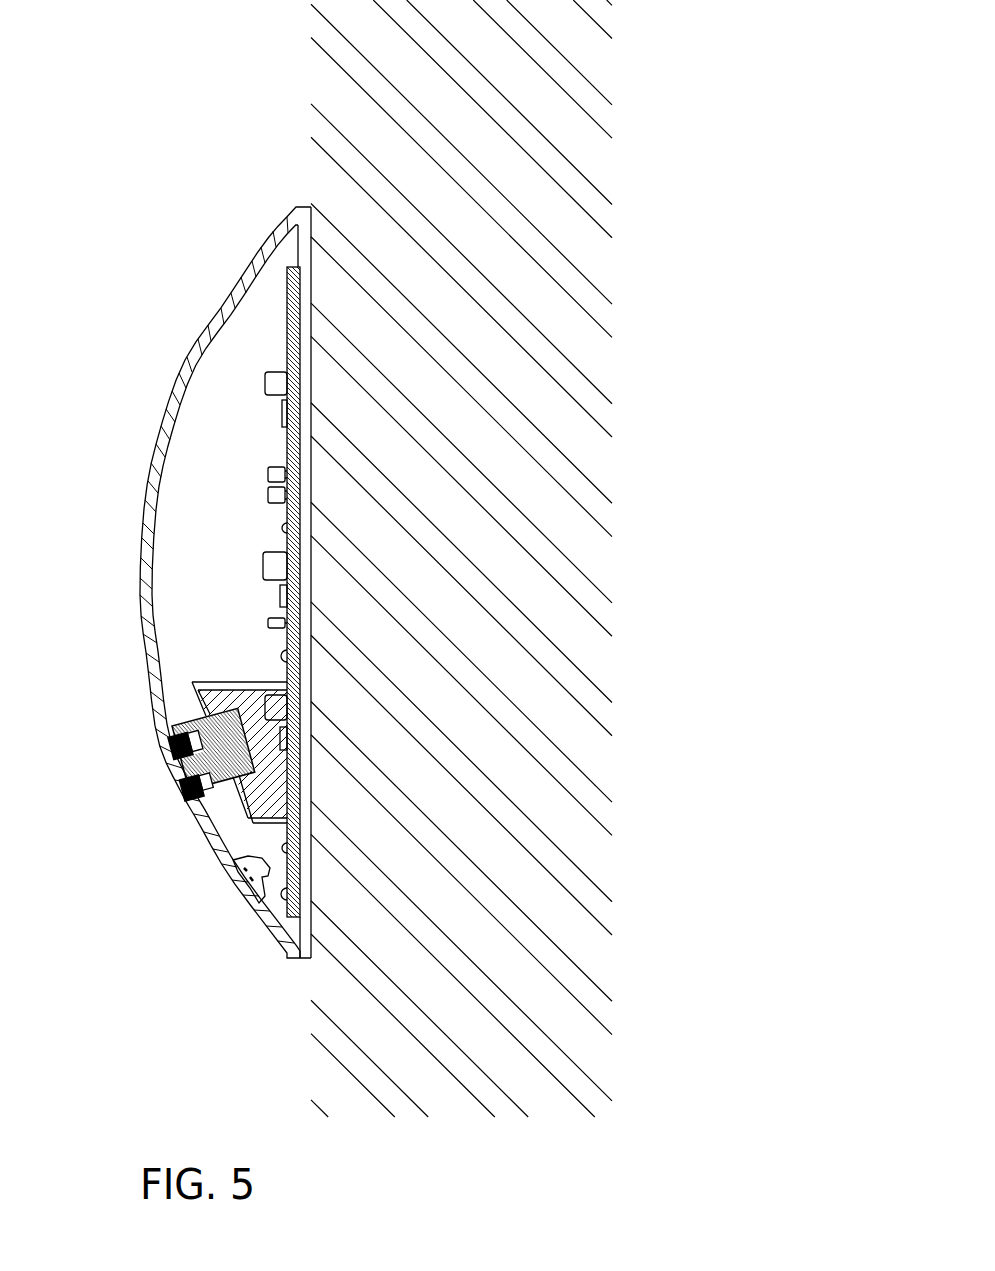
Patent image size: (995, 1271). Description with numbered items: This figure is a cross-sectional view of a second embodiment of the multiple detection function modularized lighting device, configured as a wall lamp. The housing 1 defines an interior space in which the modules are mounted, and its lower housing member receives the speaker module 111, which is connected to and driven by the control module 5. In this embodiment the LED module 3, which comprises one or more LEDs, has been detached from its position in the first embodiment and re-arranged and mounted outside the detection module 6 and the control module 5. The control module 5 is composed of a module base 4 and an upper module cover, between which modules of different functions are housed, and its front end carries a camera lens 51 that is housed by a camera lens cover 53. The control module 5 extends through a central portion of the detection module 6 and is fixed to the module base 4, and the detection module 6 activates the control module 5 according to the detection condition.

The housing 1 is at (273, 225).
The LED module 3 is at (287, 278).
The module base 4 is at (187, 729).
The control module 5 is at (225, 795).
The detection module 6 is at (157, 738).
The camera lens cover 53 is at (168, 758).
The camera lens 51 is at (180, 770).
The speaker module 111 is at (246, 888).